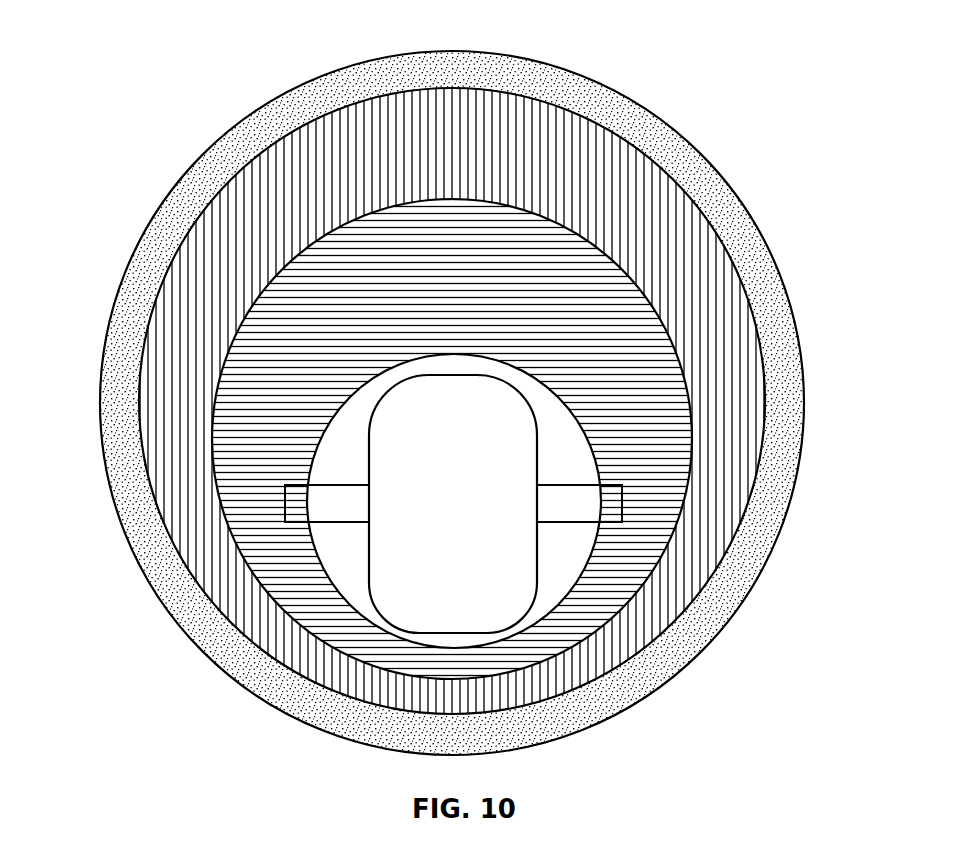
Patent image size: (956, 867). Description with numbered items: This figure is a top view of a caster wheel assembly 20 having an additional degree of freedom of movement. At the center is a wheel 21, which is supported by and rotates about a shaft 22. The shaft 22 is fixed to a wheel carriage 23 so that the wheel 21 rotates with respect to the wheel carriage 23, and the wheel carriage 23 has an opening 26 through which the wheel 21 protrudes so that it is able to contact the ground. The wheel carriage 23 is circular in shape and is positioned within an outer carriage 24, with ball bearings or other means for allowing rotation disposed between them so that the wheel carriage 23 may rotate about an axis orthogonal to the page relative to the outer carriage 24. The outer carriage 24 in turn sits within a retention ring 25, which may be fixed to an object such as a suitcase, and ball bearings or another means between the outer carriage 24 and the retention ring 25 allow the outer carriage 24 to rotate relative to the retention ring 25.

The caster wheel assembly 20 is at (130, 70).
The wheel 21 is at (505, 549).
The shaft 22 is at (623, 503).
The wheel carriage 23 is at (637, 350).
The outer carriage 24 is at (668, 213).
The retention ring 25 is at (579, 96).
The opening 26 is at (535, 608).